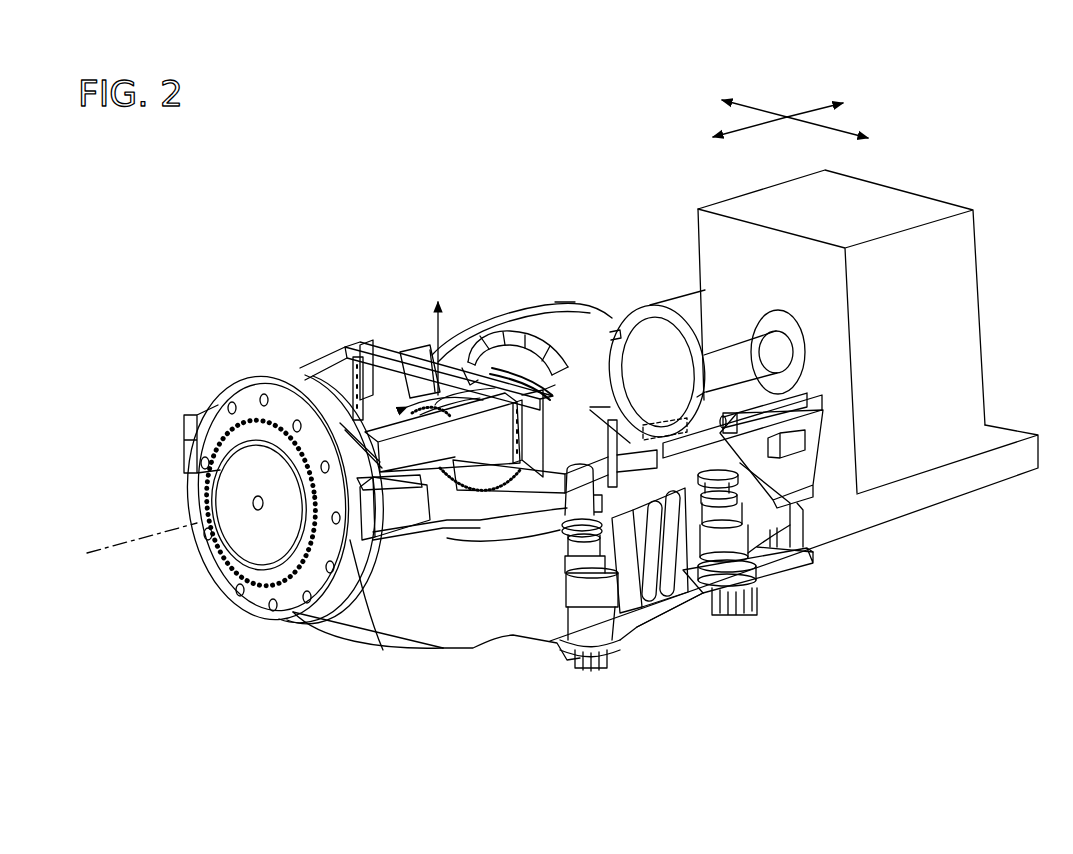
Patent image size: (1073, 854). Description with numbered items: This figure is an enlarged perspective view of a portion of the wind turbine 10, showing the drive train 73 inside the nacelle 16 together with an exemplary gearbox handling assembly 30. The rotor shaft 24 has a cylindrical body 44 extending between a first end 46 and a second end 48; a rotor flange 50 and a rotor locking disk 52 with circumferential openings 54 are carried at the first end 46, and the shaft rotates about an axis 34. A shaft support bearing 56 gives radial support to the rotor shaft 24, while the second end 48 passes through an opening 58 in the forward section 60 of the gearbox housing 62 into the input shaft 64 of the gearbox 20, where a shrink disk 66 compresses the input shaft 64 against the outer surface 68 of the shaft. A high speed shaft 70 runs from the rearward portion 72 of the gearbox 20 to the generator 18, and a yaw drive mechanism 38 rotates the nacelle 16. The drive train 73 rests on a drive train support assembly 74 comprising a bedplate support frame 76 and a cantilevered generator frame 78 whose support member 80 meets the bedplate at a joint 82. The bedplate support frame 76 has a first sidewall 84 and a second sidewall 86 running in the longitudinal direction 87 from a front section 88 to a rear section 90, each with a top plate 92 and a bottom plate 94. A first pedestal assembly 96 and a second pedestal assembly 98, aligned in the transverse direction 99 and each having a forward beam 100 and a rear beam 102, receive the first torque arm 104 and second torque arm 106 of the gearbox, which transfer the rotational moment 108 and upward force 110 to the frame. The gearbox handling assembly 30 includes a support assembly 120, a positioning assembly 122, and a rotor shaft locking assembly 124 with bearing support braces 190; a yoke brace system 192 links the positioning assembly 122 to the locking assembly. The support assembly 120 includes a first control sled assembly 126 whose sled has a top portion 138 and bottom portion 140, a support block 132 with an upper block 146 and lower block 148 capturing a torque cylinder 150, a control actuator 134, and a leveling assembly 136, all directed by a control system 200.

The wind turbine 10 is at (325, 170).
The nacelle 16 is at (478, 228).
The generator 18 is at (862, 190).
The gearbox 20 is at (625, 313).
The rotor shaft 24 is at (318, 356).
The gearbox handling assembly 30 is at (367, 255).
The axis 34 is at (120, 543).
The yaw drive mechanism 38 is at (607, 597).
The cylindrical body 44 is at (356, 392).
The first end 46 is at (293, 377).
The second end 48 is at (410, 342).
The rotor flange 50 is at (228, 553).
The rotor locking disk 52 is at (260, 602).
The openings 54 is at (293, 612).
The shaft support bearing 56 is at (402, 537).
The opening 58 is at (496, 335).
The forward section 60 is at (515, 328).
The gearbox housing 62 is at (575, 320).
The input shaft 64 is at (487, 373).
The shrink disk 66 is at (540, 395).
The outer surface 68 is at (373, 433).
The high speed shaft 70 is at (732, 350).
The rearward portion 72 is at (654, 277).
The drive train 73 is at (550, 246).
The drive train support assembly 74 is at (833, 590).
The bedplate support frame 76 is at (560, 657).
The generator frame 78 is at (960, 480).
The support member 80 is at (950, 500).
The joint 82 is at (823, 560).
The first sidewall 84 is at (505, 603).
The second sidewall 86 is at (205, 388).
The longitudinal direction 87 is at (798, 110).
The front section 88 is at (372, 660).
The rear section 90 is at (833, 637).
The top plate 92 is at (418, 543).
The bottom plate 94 is at (708, 620).
The first pedestal assembly 96 is at (735, 648).
The second pedestal assembly 98 is at (358, 337).
The transverse direction 99 is at (762, 110).
The forward beam 100 is at (637, 587).
The rear beam 102 is at (720, 640).
The first torque arm 104 is at (620, 417).
The second torque arm 106 is at (430, 350).
The rotational moment 108 is at (481, 431).
The upward force 110 is at (442, 318).
The support assembly 120 is at (815, 485).
The positioning assembly 122 is at (530, 480).
The rotor shaft locking assembly 124 is at (374, 556).
The first control sled assembly 126 is at (840, 423).
The support block 132 is at (650, 420).
The control actuator 134 is at (778, 400).
The leveling assembly 136 is at (823, 503).
The top portion 138 is at (753, 610).
The bottom portion 140 is at (820, 490).
The upper block 146 is at (650, 313).
The lower block 148 is at (747, 567).
The torque cylinder 150 is at (683, 577).
The bearing support braces 190 is at (430, 520).
The yoke brace system 192 is at (300, 368).
The control system 200 is at (797, 445).